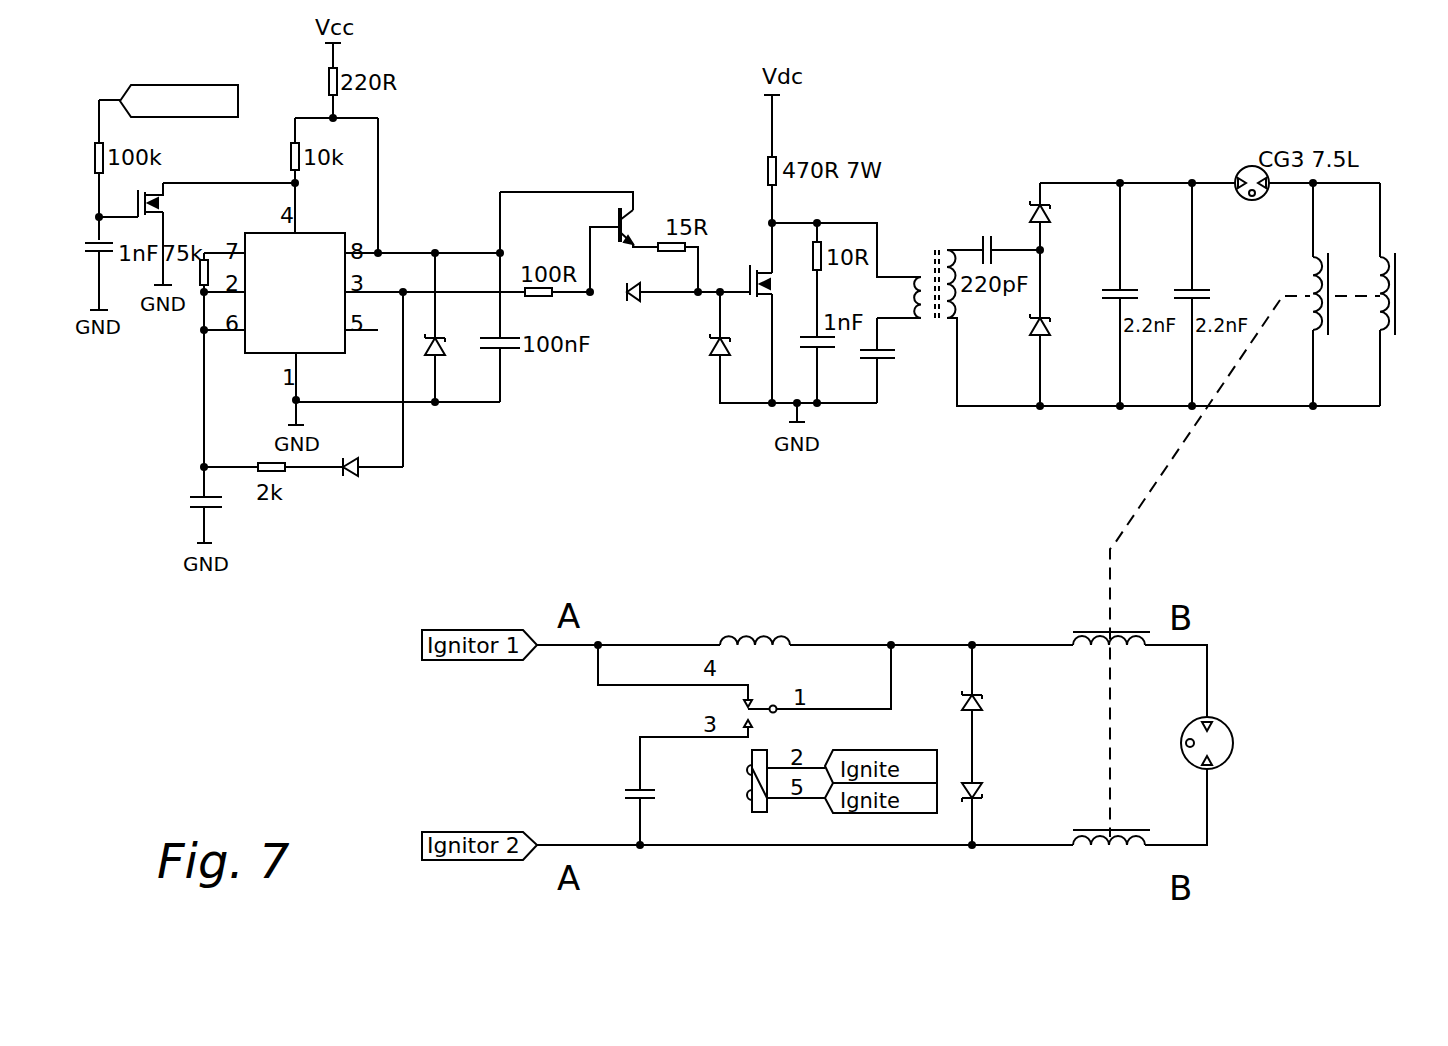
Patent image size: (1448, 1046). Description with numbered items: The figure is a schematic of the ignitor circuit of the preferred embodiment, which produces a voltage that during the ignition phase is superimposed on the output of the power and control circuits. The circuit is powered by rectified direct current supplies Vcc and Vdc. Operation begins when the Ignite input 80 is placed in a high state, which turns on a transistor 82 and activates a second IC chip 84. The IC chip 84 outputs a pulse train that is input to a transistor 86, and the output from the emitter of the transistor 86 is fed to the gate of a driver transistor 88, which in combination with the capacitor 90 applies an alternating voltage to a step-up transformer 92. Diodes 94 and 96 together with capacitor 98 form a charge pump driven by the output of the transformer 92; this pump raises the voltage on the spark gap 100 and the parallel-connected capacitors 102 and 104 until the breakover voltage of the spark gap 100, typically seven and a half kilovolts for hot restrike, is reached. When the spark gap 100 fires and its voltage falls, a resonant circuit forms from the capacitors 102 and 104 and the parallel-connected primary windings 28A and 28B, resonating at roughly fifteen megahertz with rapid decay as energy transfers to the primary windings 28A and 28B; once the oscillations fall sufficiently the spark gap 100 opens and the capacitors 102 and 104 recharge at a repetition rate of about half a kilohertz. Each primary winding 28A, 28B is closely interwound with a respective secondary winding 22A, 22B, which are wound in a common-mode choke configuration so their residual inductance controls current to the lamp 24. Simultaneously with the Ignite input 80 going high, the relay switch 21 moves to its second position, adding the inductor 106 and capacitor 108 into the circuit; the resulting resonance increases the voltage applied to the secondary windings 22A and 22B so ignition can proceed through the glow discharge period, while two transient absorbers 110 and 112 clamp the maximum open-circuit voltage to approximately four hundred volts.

The Ignite input 80 is at (101, 97).
The transistor 82 is at (152, 190).
The second IC chip 84 is at (274, 232).
The transistor 86 is at (638, 220).
The driver transistor 88 is at (753, 266).
The capacitor 90 is at (882, 365).
The step-up transformer 92 is at (934, 248).
The diode 94 is at (1044, 193).
The diode 96 is at (1045, 309).
The capacitor 98 is at (987, 230).
The spark gap 100 is at (1243, 170).
The capacitor 102 is at (1124, 287).
The capacitor 104 is at (1196, 287).
The primary winding 28A is at (1323, 253).
The primary winding 28B is at (1393, 253).
The inductor 106 is at (752, 630).
The relay switch 21 is at (762, 696).
The capacitor 108 is at (645, 805).
The transient absorber 110 is at (962, 692).
The transient absorber 112 is at (965, 800).
The secondary winding 22A is at (1100, 630).
The secondary winding 22B is at (1092, 850).
The lamp 24 is at (1221, 725).